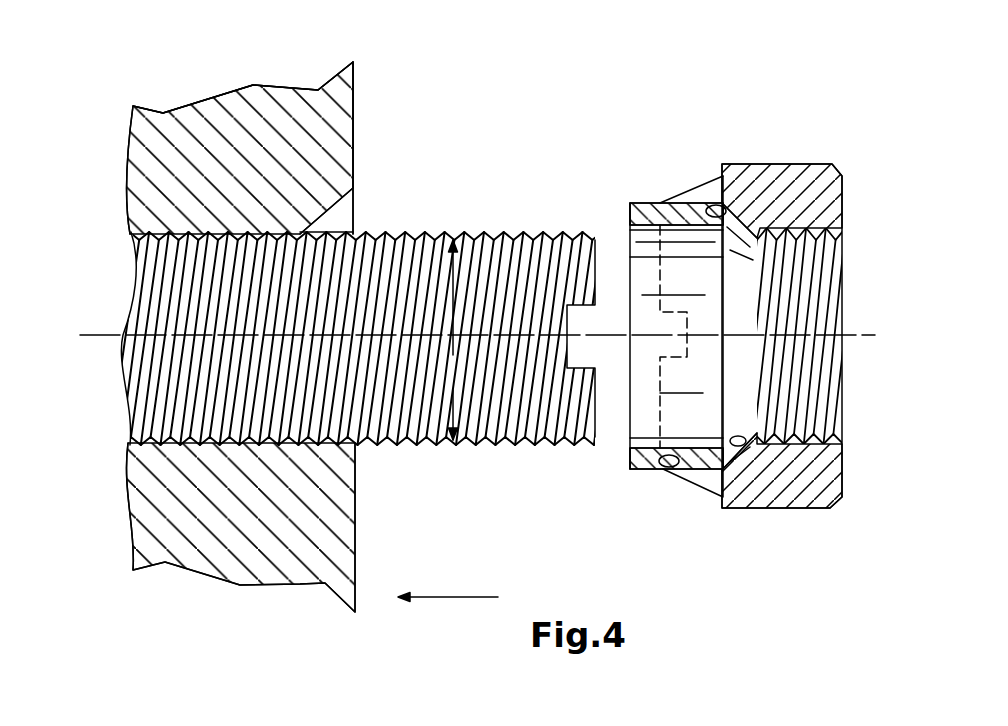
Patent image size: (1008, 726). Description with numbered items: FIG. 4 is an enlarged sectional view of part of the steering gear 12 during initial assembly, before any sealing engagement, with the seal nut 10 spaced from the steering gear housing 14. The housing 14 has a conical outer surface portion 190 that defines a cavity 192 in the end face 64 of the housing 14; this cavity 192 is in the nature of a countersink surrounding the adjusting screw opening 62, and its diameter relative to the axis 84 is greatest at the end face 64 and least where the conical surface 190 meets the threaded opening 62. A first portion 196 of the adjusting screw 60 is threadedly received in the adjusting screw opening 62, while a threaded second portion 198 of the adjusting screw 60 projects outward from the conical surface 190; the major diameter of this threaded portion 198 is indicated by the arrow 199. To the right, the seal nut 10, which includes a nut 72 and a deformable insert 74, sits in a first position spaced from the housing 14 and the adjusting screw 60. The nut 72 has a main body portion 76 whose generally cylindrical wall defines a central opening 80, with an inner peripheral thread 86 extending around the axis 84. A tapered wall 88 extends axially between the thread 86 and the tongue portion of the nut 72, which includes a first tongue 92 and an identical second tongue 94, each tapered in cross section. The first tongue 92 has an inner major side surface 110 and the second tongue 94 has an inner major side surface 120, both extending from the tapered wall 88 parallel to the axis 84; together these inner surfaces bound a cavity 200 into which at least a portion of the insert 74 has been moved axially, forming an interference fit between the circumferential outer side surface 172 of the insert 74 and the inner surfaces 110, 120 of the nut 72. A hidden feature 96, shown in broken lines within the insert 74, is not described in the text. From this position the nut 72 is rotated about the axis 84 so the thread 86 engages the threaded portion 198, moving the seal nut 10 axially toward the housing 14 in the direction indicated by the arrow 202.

The seal nut 10 is at (745, 108).
The steering gear 12 is at (198, 86).
The steering gear housing 14 is at (232, 88).
The adjusting screw 60 is at (173, 225).
The adjusting screw opening 62 is at (118, 522).
The end face 64 is at (355, 97).
The nut 72 is at (821, 163).
The deformable insert 74 is at (638, 203).
The main body portion 76 is at (785, 510).
The central opening 80 is at (800, 383).
The axis 84 is at (102, 335).
The inner peripheral thread 86 is at (835, 250).
The tapered wall 88 is at (740, 446).
The first tongue 92 is at (662, 415).
The second tongue 94 is at (658, 270).
The hidden bolt profile 96 is at (655, 350).
The inner major side surface 110 is at (658, 468).
The inner major side surface 120 is at (722, 206).
The circumferential outer side surface 172 is at (663, 202).
The conical outer surface portion 190 is at (357, 195).
The cavity 192 is at (340, 220).
The first portion of the adjusting screw 196 is at (211, 527).
The threaded second portion of the adjusting screw 198 is at (535, 448).
The arrow indicating major diameter 199 is at (457, 340).
The cavity 200 is at (700, 308).
The arrow indicating direction of movement 202 is at (448, 585).